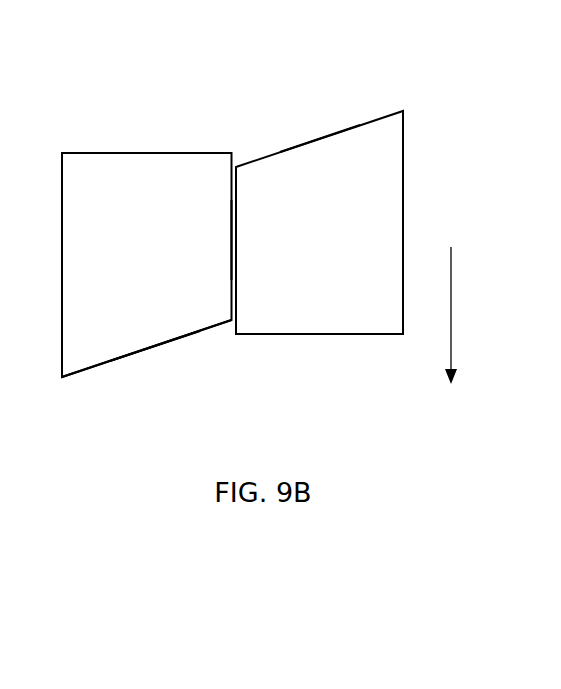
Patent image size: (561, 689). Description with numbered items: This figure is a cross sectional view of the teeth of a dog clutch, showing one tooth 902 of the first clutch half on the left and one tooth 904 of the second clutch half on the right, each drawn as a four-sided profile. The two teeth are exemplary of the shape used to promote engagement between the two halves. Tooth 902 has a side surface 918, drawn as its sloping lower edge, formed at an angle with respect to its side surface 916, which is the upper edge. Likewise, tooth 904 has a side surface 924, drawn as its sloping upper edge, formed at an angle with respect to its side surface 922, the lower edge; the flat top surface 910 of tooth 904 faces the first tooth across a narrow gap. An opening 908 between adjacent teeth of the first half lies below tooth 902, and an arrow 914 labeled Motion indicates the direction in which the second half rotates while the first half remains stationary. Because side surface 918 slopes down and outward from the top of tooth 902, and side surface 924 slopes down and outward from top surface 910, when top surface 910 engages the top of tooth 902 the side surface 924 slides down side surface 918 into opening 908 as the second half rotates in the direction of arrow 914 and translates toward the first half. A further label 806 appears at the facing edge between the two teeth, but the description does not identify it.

The tooth 902 is at (199, 141).
The tooth 904 is at (322, 103).
The hinge edge 806 is at (231, 235).
The opening 908 is at (116, 430).
The top surface 910 is at (237, 288).
The arrow 914 is at (453, 297).
The side surface 916 is at (130, 154).
The side surface 918 is at (155, 347).
The side surface 922 is at (343, 334).
The side surface 924 is at (320, 139).